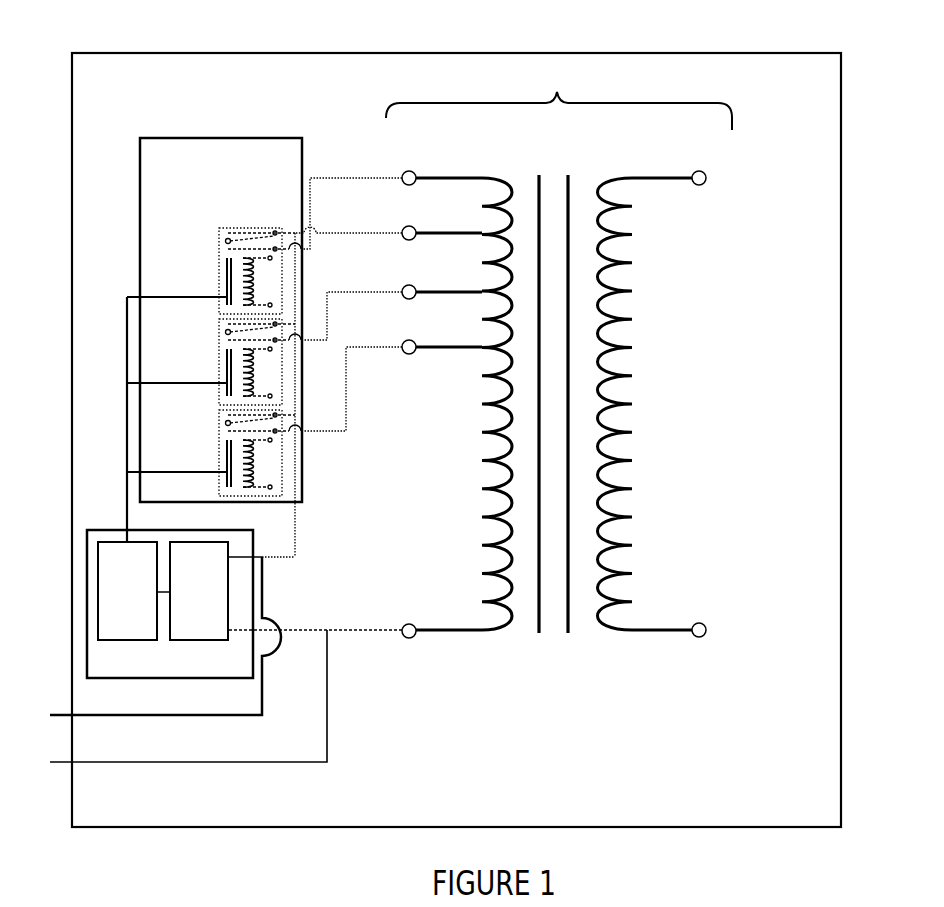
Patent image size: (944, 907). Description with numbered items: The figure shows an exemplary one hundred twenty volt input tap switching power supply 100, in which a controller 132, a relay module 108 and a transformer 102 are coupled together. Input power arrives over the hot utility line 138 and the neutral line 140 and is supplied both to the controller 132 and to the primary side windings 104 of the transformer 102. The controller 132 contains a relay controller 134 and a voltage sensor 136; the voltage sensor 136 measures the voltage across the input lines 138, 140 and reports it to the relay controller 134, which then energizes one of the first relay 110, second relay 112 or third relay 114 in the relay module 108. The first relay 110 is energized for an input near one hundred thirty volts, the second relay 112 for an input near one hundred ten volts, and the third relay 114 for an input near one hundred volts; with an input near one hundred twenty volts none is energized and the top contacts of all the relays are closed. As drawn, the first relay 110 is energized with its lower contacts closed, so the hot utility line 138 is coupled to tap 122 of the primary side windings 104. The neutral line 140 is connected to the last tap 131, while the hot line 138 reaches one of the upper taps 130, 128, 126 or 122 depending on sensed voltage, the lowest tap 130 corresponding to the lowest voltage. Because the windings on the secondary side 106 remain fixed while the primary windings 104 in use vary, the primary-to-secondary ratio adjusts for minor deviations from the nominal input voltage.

The input tap switching power supply 100 is at (457, 53).
The transformer 102 is at (586, 352).
The primary side windings 104 is at (484, 159).
The secondary side 106 is at (623, 161).
The relay module 108 is at (219, 138).
The first relay 110 is at (219, 252).
The second relay 112 is at (219, 344).
The third relay 114 is at (219, 430).
The tap 122 is at (405, 172).
The tap 126 is at (412, 226).
The tap 128 is at (412, 285).
The lowest tap 130 is at (413, 340).
The last tap 131 is at (407, 623).
The controller 132 is at (110, 529).
The relay controller 134 is at (142, 541).
The voltage sensor 136 is at (213, 541).
The hot utility line 138 is at (265, 695).
The neutral line 140 is at (222, 765).